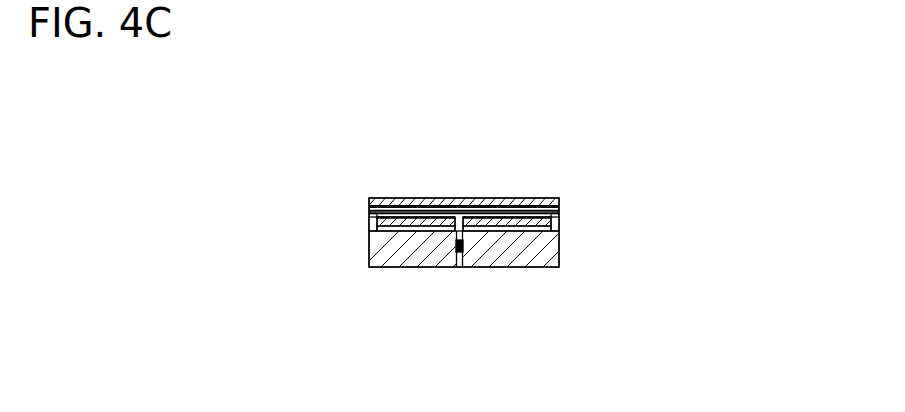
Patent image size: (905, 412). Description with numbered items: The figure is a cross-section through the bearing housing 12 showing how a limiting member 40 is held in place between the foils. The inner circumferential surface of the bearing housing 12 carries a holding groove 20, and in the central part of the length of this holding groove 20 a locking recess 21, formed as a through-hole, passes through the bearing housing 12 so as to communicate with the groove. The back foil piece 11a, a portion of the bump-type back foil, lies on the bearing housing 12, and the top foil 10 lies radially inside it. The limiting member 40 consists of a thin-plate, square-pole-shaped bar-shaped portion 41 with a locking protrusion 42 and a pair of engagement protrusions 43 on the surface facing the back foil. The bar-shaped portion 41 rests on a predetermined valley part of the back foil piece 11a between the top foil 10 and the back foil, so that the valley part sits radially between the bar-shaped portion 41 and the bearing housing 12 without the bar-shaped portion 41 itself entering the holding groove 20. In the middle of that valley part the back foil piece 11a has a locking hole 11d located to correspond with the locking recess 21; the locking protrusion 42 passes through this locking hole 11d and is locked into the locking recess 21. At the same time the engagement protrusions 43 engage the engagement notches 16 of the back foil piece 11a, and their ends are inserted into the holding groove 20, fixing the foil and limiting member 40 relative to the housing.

The top foil 10 is at (437, 198).
The bar-shaped portion 41 is at (403, 212).
The engagement protrusions 43 is at (372, 230).
The engagement notches 16 is at (372, 220).
The back foil piece 11a is at (490, 225).
The locking hole 11d is at (458, 218).
The holding groove 20 is at (510, 228).
The bearing housing 12 is at (403, 250).
The locking recess 21 is at (462, 267).
The locking protrusion 42 is at (457, 242).
The limiting member 40 is at (519, 216).